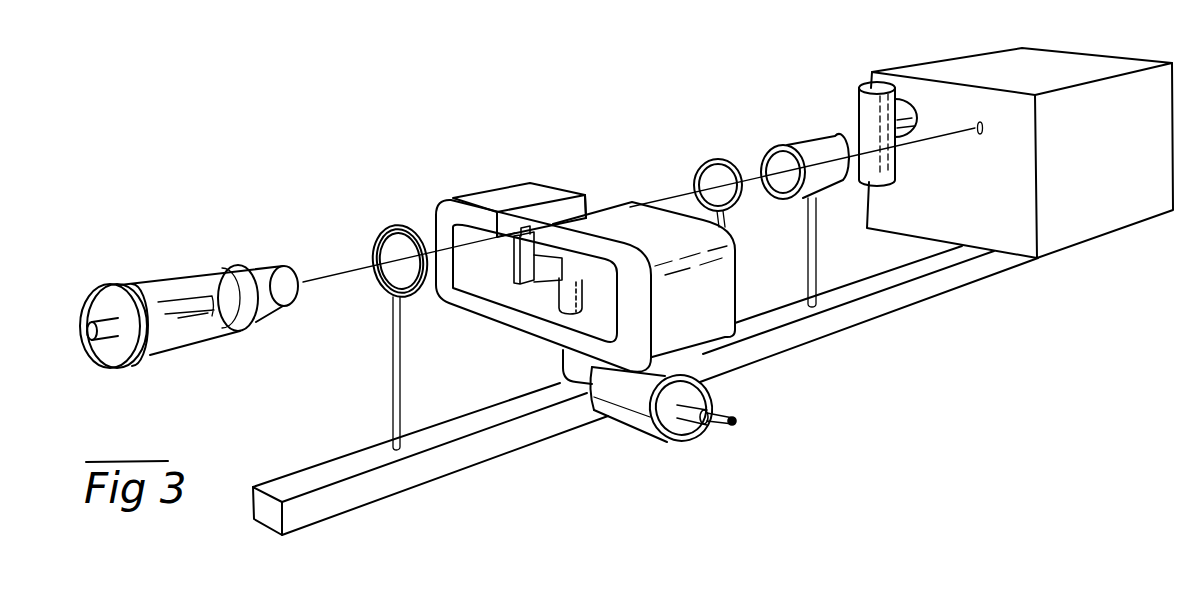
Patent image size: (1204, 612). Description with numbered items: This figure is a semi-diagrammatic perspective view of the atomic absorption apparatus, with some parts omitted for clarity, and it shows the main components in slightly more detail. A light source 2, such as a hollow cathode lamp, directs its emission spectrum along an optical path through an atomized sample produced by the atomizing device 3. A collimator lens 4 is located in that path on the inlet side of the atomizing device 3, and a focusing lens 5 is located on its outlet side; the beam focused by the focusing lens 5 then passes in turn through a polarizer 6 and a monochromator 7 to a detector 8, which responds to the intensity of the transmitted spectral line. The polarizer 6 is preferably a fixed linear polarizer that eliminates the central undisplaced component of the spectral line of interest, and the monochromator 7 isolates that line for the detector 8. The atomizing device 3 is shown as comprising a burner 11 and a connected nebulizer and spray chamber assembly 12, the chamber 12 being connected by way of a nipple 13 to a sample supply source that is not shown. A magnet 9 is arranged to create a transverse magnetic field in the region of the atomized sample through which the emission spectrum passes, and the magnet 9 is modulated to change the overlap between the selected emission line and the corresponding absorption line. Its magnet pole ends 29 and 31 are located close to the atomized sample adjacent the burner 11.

The light source 2 is at (190, 288).
The atomizing device 3 is at (528, 273).
The collimator lens 4 is at (383, 240).
The focusing lens 5 is at (720, 180).
The polarizer 6 is at (817, 155).
The monochromator 7 is at (997, 63).
The detector 8 is at (870, 110).
The magnet 9 is at (497, 185).
The burner 11 is at (553, 268).
The nebulizer and spray chamber assembly 12 is at (623, 413).
The nipple 13 is at (727, 427).
The magnet pole end 29 is at (547, 208).
The magnet pole end 31 is at (610, 218).